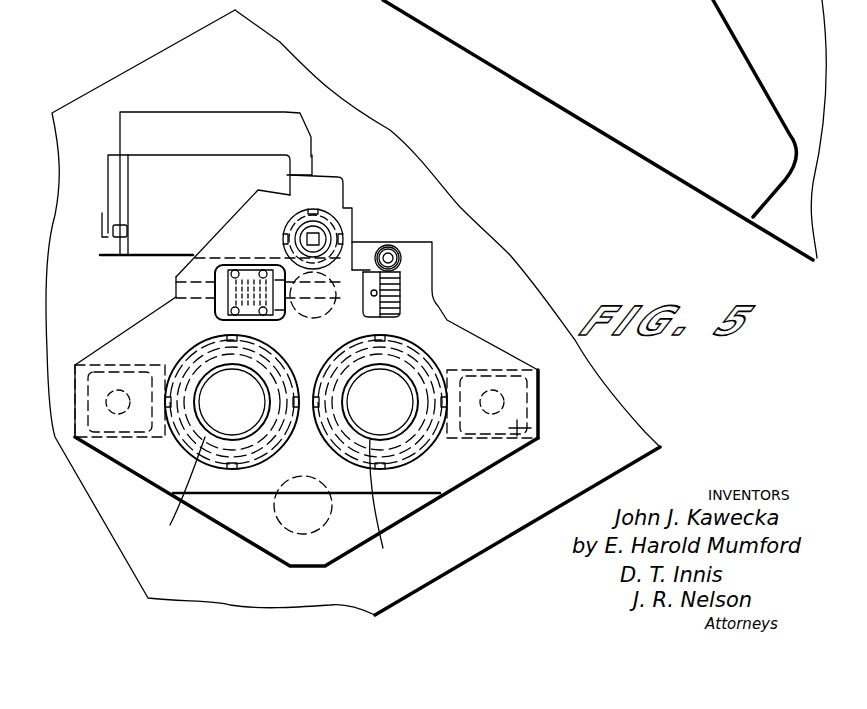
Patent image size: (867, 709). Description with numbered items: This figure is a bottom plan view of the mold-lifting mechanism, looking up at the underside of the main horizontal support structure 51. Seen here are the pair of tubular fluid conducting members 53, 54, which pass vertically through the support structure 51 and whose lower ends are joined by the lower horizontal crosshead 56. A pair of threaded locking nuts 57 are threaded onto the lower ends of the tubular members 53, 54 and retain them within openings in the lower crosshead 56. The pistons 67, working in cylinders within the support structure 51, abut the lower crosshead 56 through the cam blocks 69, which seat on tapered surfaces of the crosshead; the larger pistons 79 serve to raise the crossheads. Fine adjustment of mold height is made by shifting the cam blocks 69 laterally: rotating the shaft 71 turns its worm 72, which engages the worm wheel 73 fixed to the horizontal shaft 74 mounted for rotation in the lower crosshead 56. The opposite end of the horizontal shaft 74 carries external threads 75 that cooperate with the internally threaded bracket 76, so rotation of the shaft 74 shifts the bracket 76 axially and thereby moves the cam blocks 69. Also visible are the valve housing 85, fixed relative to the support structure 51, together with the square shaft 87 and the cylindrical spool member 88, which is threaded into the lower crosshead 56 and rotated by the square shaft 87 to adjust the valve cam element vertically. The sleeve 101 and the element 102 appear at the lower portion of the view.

The main horizontal support structure 51 is at (162, 65).
The tubular fluid conducting member 53 is at (197, 373).
The tubular fluid conducting member 54 is at (418, 375).
The lower horizontal crosshead 56 is at (445, 330).
The threaded locking nut 57 is at (180, 448).
The piston 67 is at (113, 407).
The cam block 69 is at (102, 437).
The shaft 71 is at (390, 257).
The worm 72 is at (402, 250).
The worm wheel 73 is at (400, 292).
The horizontal shaft 74 is at (370, 245).
The external threads 75 is at (215, 287).
The bracket 76 is at (218, 306).
The piston 79 is at (294, 322).
The valve housing 85 is at (137, 178).
The square shaft 87 is at (313, 237).
The cylindrical spool member 88 is at (330, 232).
The sleeve 101 is at (177, 495).
The lead wire 102 is at (392, 503).